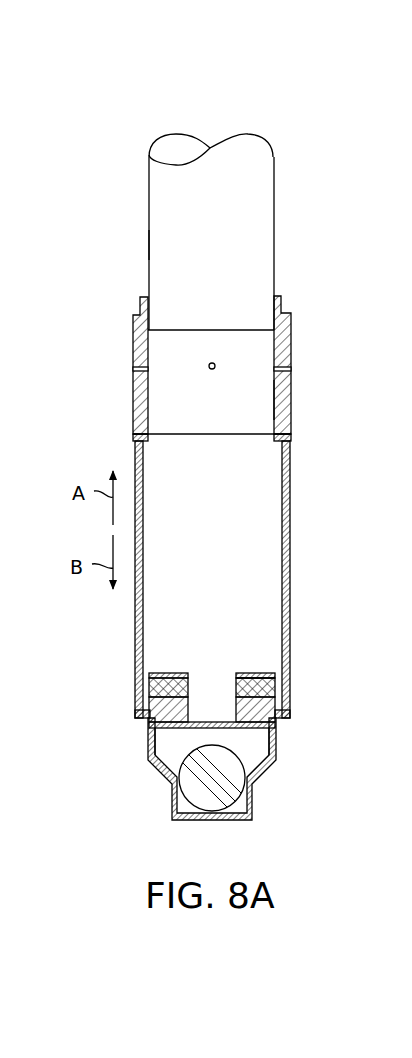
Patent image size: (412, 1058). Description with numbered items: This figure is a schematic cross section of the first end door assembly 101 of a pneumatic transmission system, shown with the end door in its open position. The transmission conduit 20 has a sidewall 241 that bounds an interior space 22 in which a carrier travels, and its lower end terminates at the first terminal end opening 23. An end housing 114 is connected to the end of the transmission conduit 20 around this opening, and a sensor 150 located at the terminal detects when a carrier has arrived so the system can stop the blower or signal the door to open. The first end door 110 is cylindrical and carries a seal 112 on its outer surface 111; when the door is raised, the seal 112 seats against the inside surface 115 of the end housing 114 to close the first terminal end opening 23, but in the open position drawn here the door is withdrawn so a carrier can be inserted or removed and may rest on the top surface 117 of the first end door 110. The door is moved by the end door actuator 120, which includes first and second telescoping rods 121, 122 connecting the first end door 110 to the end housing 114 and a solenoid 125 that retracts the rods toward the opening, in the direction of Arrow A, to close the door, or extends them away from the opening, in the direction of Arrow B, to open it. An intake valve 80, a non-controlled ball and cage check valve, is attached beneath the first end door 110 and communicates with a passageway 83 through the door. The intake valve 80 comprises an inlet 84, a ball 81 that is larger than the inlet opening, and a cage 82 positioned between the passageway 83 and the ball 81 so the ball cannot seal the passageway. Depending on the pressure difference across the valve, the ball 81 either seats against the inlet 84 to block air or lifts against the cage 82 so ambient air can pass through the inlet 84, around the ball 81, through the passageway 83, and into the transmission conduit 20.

The transmission conduit 20 is at (205, 232).
The interior space 22 is at (172, 200).
The sidewall 241 is at (148, 245).
The first end door assembly 101 is at (223, 494).
The end housing 114 is at (135, 333).
The inside surface 115 is at (277, 407).
The sensor 150 is at (212, 362).
The first terminal end opening 23 is at (211, 444).
The end door actuator 120 is at (220, 542).
The solenoid 125 is at (135, 446).
The first telescoping rod 121 is at (135, 606).
The second telescoping rod 122 is at (284, 621).
The intake valve 80 is at (196, 739).
The passageway 83 is at (192, 690).
The seal 112 is at (263, 688).
The top surface 117 is at (258, 680).
The outer surface 111 is at (250, 683).
The first end door 110 is at (266, 729).
The inlet 84 is at (184, 823).
The cage 82 is at (158, 740).
The ball 81 is at (228, 790).